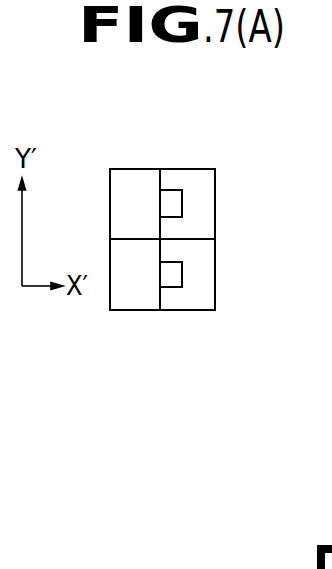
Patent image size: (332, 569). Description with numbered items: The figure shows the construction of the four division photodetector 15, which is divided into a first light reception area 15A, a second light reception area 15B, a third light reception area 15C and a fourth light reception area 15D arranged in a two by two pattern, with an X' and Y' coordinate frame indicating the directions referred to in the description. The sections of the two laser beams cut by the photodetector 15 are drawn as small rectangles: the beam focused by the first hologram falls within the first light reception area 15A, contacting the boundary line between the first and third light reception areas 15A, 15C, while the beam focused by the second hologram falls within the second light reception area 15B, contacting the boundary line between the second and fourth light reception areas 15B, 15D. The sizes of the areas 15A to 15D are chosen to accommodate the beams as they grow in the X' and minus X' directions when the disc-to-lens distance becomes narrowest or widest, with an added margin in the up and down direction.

The four division photodetector 15 is at (104, 260).
The first light reception area 15A is at (198, 187).
The second light reception area 15B is at (195, 295).
The third light reception area 15C is at (125, 189).
The fourth light reception area 15D is at (125, 292).